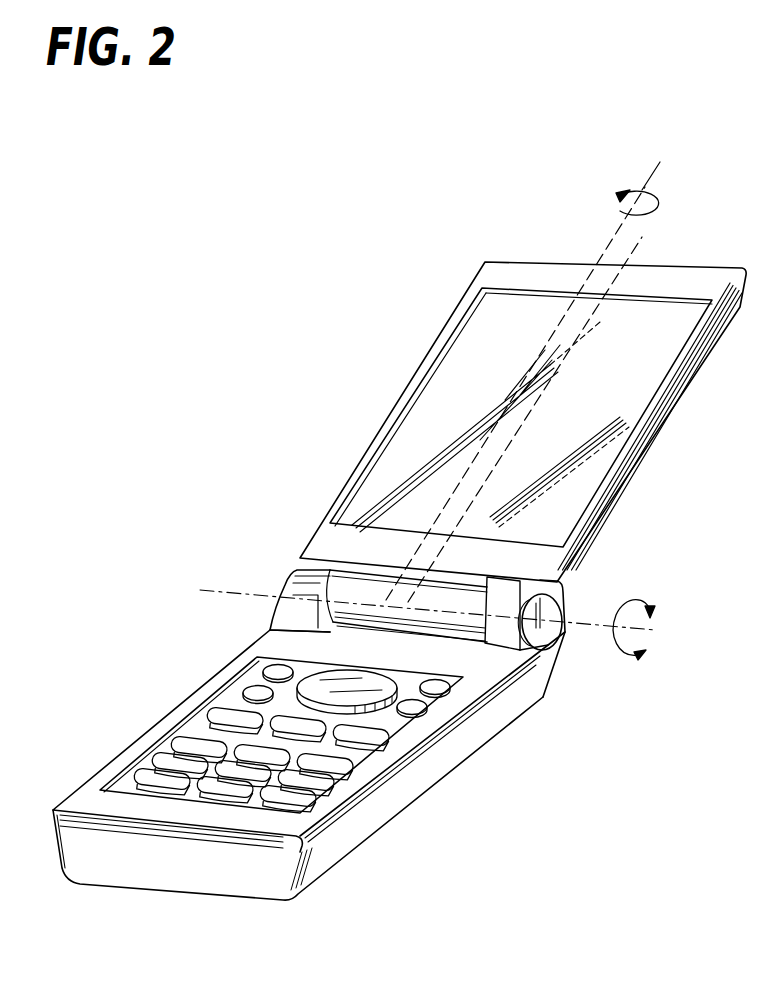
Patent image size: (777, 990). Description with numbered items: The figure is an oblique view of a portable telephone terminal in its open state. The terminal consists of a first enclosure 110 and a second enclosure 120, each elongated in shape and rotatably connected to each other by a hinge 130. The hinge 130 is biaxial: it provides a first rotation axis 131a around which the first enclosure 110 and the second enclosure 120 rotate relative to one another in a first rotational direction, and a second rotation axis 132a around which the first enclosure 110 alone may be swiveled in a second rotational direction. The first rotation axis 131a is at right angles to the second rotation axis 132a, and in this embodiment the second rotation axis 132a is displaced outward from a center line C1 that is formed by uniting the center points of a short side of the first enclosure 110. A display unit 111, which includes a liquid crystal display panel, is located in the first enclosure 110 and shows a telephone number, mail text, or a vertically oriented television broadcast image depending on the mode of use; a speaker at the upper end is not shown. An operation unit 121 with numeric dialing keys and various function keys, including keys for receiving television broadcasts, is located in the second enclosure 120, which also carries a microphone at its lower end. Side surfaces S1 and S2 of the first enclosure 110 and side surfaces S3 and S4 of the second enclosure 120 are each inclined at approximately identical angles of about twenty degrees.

The first enclosure 110 is at (503, 278).
The display unit 111 is at (455, 392).
The second enclosure 120 is at (423, 777).
The operation unit 121 is at (183, 743).
The hinge 130 is at (292, 580).
The first rotation axis 131a is at (597, 620).
The second rotation axis 132a is at (655, 172).
The center line C1 is at (642, 235).
The side surface of the first enclosure S1 is at (658, 430).
The side surface of the first enclosure S2 is at (377, 437).
The side surface of the second enclosure S3 is at (485, 718).
The side surface of the second enclosure S4 is at (58, 852).